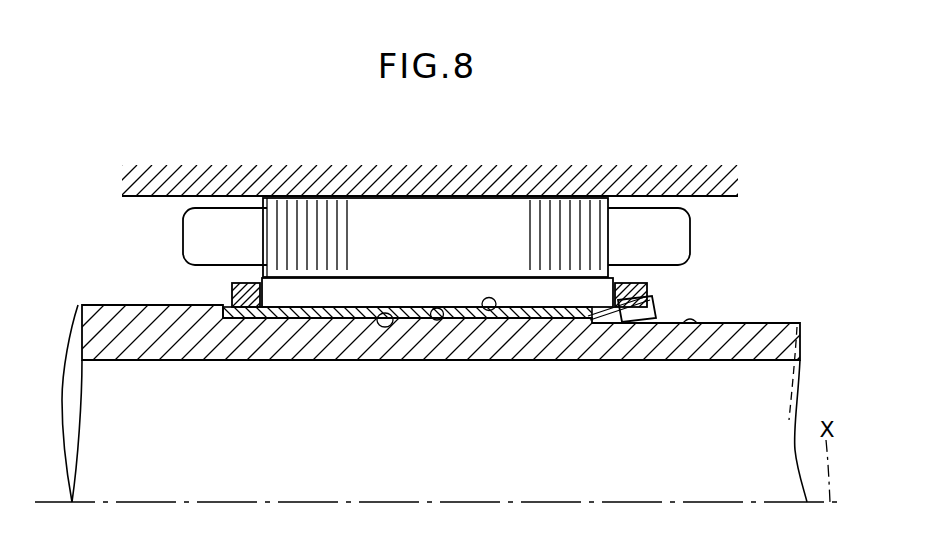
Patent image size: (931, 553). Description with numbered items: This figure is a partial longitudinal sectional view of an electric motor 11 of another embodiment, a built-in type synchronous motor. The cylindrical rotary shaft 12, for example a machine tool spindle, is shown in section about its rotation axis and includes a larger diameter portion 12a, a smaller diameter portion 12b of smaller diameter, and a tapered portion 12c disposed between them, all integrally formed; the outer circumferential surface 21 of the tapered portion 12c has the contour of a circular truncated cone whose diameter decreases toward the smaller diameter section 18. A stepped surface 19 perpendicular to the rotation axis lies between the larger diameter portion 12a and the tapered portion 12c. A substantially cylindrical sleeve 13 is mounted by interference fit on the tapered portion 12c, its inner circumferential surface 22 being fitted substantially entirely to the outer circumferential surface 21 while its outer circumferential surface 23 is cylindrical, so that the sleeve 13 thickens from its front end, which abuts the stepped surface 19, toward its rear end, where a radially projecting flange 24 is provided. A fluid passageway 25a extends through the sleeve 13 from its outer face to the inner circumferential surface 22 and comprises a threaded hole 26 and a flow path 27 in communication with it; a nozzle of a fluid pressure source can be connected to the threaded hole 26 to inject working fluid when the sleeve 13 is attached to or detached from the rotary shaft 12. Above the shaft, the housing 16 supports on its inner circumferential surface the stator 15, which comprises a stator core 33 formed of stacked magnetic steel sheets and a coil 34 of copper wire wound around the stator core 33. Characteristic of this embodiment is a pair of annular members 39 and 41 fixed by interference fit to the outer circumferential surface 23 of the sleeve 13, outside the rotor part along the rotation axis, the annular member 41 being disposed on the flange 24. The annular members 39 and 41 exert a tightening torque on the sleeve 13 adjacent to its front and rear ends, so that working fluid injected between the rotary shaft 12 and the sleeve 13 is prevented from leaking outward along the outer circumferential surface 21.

The electric motor 11 is at (66, 243).
The rotary shaft 12 is at (84, 300).
The larger diameter portion 12a is at (128, 304).
The smaller diameter portion 12b is at (785, 325).
The tapered portion 12c is at (352, 362).
The sleeve 13 is at (296, 330).
The stator 15 is at (703, 223).
The housing 16 is at (735, 197).
The smaller diameter section 18 is at (223, 320).
The stepped surface 19 is at (228, 300).
The outer circumferential surface of the tapered portion 21 is at (437, 322).
The inner circumferential surface of the sleeve 22 is at (383, 320).
The outer circumferential surface of the sleeve 23 is at (488, 312).
The flange 24 is at (648, 290).
The fluid passageway 25a is at (667, 297).
The threaded hole 26 is at (637, 325).
The flow path 27 is at (590, 318).
The stator core 33 is at (256, 196).
The coil 34 is at (217, 196).
The annular member 39 is at (235, 290).
The annular member 41 is at (632, 312).